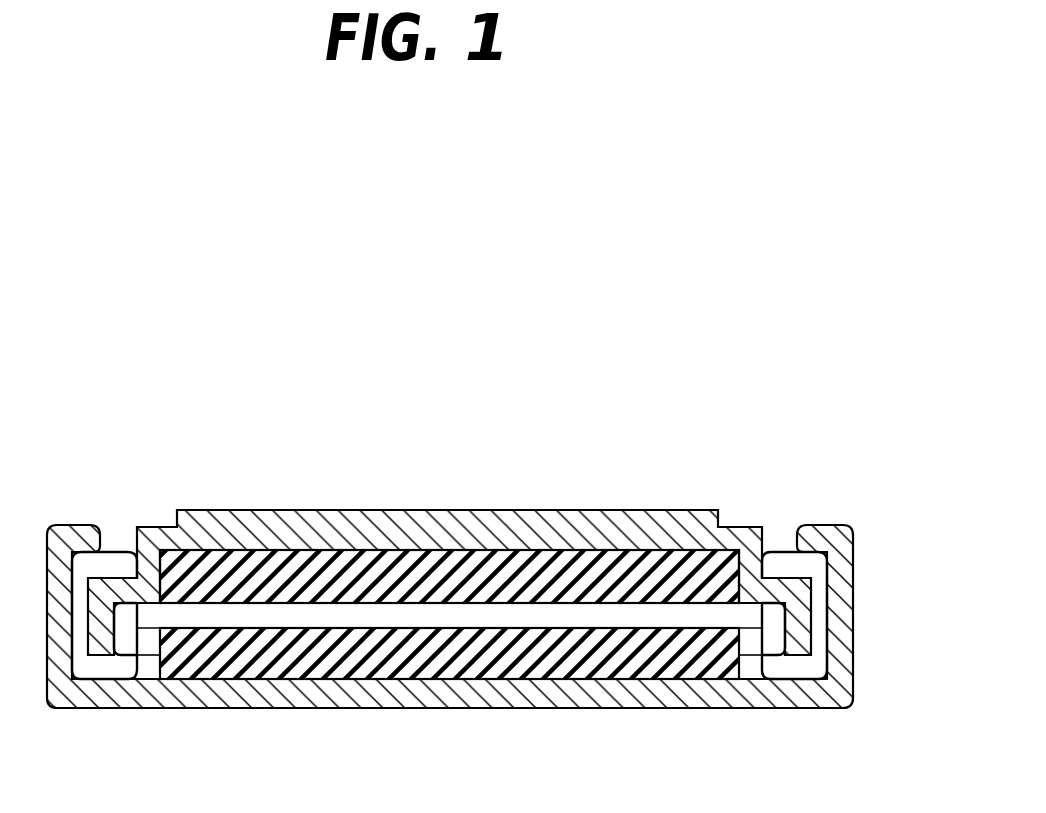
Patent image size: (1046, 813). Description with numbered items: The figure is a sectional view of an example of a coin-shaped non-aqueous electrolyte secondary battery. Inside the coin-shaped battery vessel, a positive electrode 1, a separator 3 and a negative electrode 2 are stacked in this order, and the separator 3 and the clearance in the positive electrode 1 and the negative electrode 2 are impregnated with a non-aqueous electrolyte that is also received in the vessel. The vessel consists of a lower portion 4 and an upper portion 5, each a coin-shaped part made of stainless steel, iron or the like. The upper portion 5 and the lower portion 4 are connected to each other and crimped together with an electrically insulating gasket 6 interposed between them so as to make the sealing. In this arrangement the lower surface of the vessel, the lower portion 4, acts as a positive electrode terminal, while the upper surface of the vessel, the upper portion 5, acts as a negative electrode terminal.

The positive electrode 1 is at (313, 667).
The negative electrode 2 is at (250, 560).
The separator 3 is at (508, 615).
The lower portion of the battery vessel 4 is at (848, 607).
The upper portion of the battery vessel 5 is at (445, 538).
The gasket 6 is at (772, 562).